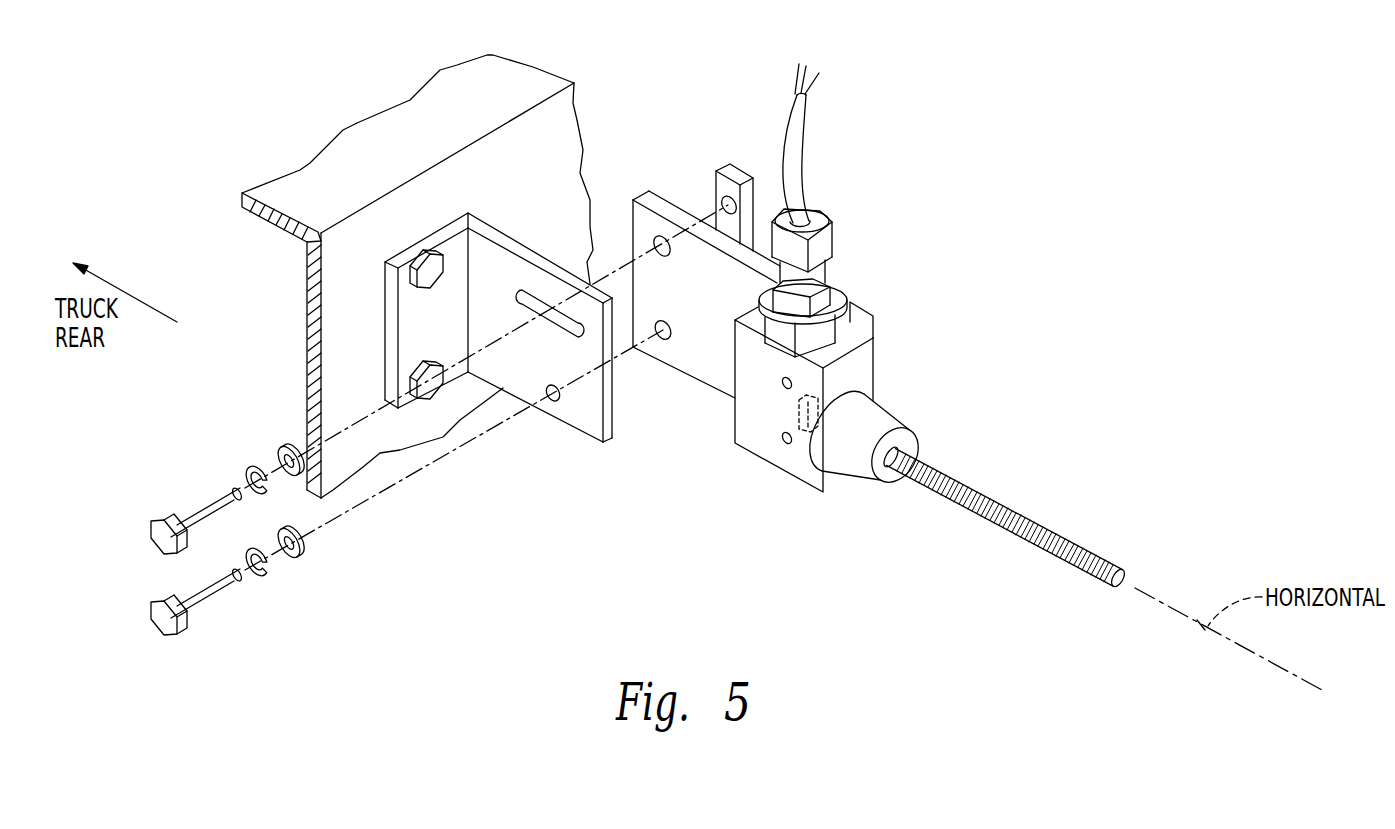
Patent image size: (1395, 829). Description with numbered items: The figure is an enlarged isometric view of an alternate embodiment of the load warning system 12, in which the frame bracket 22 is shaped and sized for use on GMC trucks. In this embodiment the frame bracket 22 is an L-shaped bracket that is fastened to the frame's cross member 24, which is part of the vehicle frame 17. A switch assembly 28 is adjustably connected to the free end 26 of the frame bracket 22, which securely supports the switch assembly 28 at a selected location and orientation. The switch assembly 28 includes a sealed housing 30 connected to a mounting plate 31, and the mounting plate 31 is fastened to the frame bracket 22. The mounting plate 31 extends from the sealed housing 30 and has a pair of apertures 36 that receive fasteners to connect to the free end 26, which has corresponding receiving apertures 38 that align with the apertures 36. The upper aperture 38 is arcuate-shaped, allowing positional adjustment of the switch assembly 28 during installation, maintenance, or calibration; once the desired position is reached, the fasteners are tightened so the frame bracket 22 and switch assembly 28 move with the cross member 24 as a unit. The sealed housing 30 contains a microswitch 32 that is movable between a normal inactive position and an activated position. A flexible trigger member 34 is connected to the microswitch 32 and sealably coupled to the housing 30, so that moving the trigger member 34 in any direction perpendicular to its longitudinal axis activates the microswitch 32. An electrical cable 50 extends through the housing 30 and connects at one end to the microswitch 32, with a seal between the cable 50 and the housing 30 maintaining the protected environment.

The load warning system 12 is at (944, 283).
The frame 17 is at (229, 199).
The frame bracket 22 is at (498, 243).
The cross member 24 is at (447, 95).
The free end 26 is at (592, 281).
The switch assembly 28 is at (862, 284).
The sealed housing 30 is at (862, 369).
The mounting plate 31 is at (693, 362).
The microswitch 32 is at (819, 423).
The flexible trigger member 34 is at (1080, 550).
The apertures 36 is at (658, 240).
The receiving apertures 38 is at (541, 318).
The electrical cable 50 is at (797, 137).